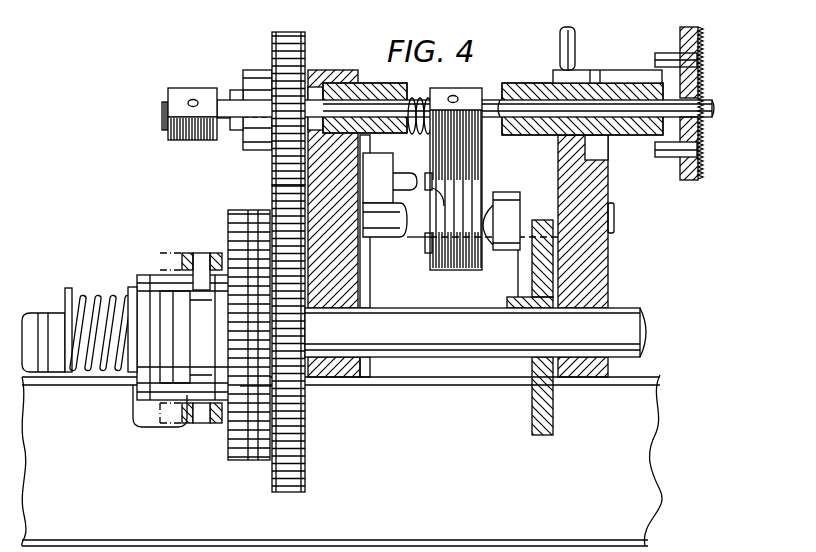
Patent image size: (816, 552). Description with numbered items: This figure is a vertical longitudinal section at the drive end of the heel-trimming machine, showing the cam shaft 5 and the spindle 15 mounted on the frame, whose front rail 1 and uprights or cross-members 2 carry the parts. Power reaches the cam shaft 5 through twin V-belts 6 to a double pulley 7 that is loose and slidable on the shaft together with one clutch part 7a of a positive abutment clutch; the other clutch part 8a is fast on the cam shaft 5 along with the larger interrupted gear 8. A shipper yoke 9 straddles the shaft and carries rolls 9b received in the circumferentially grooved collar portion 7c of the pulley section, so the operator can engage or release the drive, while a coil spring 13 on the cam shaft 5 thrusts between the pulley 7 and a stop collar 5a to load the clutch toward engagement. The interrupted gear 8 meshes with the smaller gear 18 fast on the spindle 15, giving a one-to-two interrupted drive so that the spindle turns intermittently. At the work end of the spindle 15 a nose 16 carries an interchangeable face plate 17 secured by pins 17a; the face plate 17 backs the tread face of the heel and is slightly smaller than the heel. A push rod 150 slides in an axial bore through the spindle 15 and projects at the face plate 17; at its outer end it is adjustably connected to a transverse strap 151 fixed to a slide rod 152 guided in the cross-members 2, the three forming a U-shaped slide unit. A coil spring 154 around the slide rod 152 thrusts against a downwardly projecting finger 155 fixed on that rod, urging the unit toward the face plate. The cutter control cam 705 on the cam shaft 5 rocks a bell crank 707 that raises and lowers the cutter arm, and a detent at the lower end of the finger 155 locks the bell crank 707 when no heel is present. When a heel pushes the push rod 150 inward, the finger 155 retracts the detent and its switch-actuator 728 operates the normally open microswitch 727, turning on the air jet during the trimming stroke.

The front rail 1 is at (648, 511).
The uprights 2 is at (347, 290).
The cam shaft 5 is at (640, 310).
The stop collar 5a is at (68, 298).
The twin V-belts 6 is at (163, 275).
The double pulley 7 is at (138, 284).
The clutch part 7a is at (240, 466).
The grooved collar portion 7c is at (207, 310).
The interrupted gear 8 is at (286, 500).
The clutch part 8a is at (265, 387).
The shipper yoke 9 is at (188, 246).
The rolls 9b is at (205, 252).
The coil spring 13 is at (95, 383).
The spindle 15 is at (240, 90).
The nose 16 is at (663, 55).
The face plate 17 is at (704, 171).
The pins 17a is at (672, 158).
The gear 18 is at (311, 48).
The push rod 150 is at (163, 108).
The transverse strap 151 is at (178, 95).
The slide rod 152 is at (165, 130).
The coil spring 154 is at (415, 100).
The finger 155 is at (482, 162).
The cutter control cam 705 is at (532, 413).
The bell crank 707 is at (522, 274).
The microswitch 727 is at (395, 157).
The switch-actuator 728 is at (461, 212).